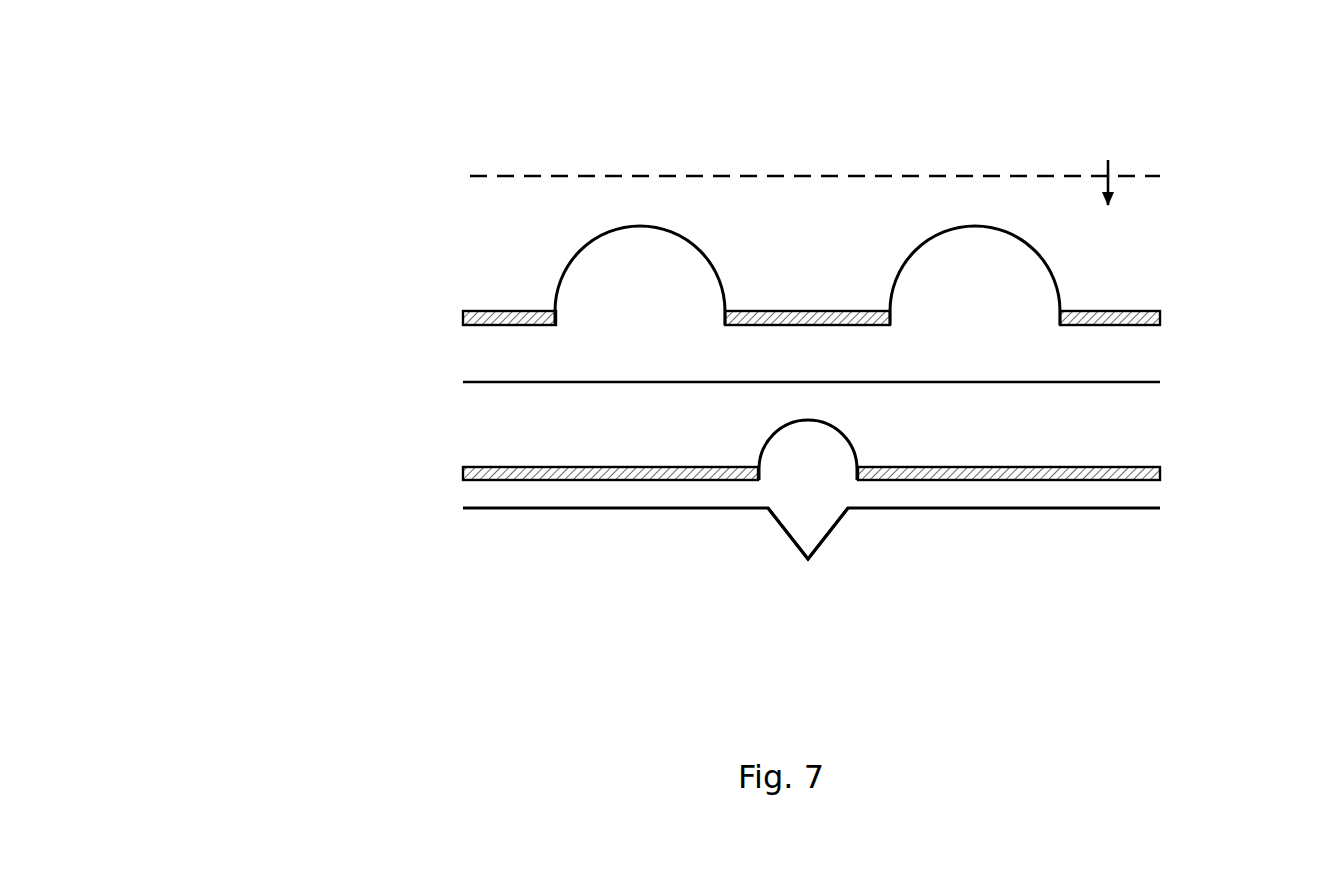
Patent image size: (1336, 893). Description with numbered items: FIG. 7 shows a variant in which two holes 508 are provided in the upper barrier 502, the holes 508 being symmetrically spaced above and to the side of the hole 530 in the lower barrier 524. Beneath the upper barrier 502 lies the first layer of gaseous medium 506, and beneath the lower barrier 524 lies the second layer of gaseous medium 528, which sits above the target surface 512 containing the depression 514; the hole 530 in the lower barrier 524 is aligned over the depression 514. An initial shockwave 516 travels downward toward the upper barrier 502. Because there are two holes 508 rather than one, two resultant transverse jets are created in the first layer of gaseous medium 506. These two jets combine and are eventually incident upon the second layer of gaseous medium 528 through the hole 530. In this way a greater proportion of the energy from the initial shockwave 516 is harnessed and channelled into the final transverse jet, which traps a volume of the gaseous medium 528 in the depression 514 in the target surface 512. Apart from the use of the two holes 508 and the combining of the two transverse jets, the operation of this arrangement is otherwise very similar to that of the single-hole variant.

The upper barrier 502 is at (465, 313).
The first layer of gaseous medium 506 is at (617, 360).
The holes 508 is at (972, 313).
The target surface 512 is at (1068, 552).
The depression 514 is at (826, 535).
The initial shockwave 516 is at (995, 176).
The lower barrier 524 is at (485, 472).
The second layer of gaseous medium 528 is at (532, 492).
The hole 530 is at (797, 473).